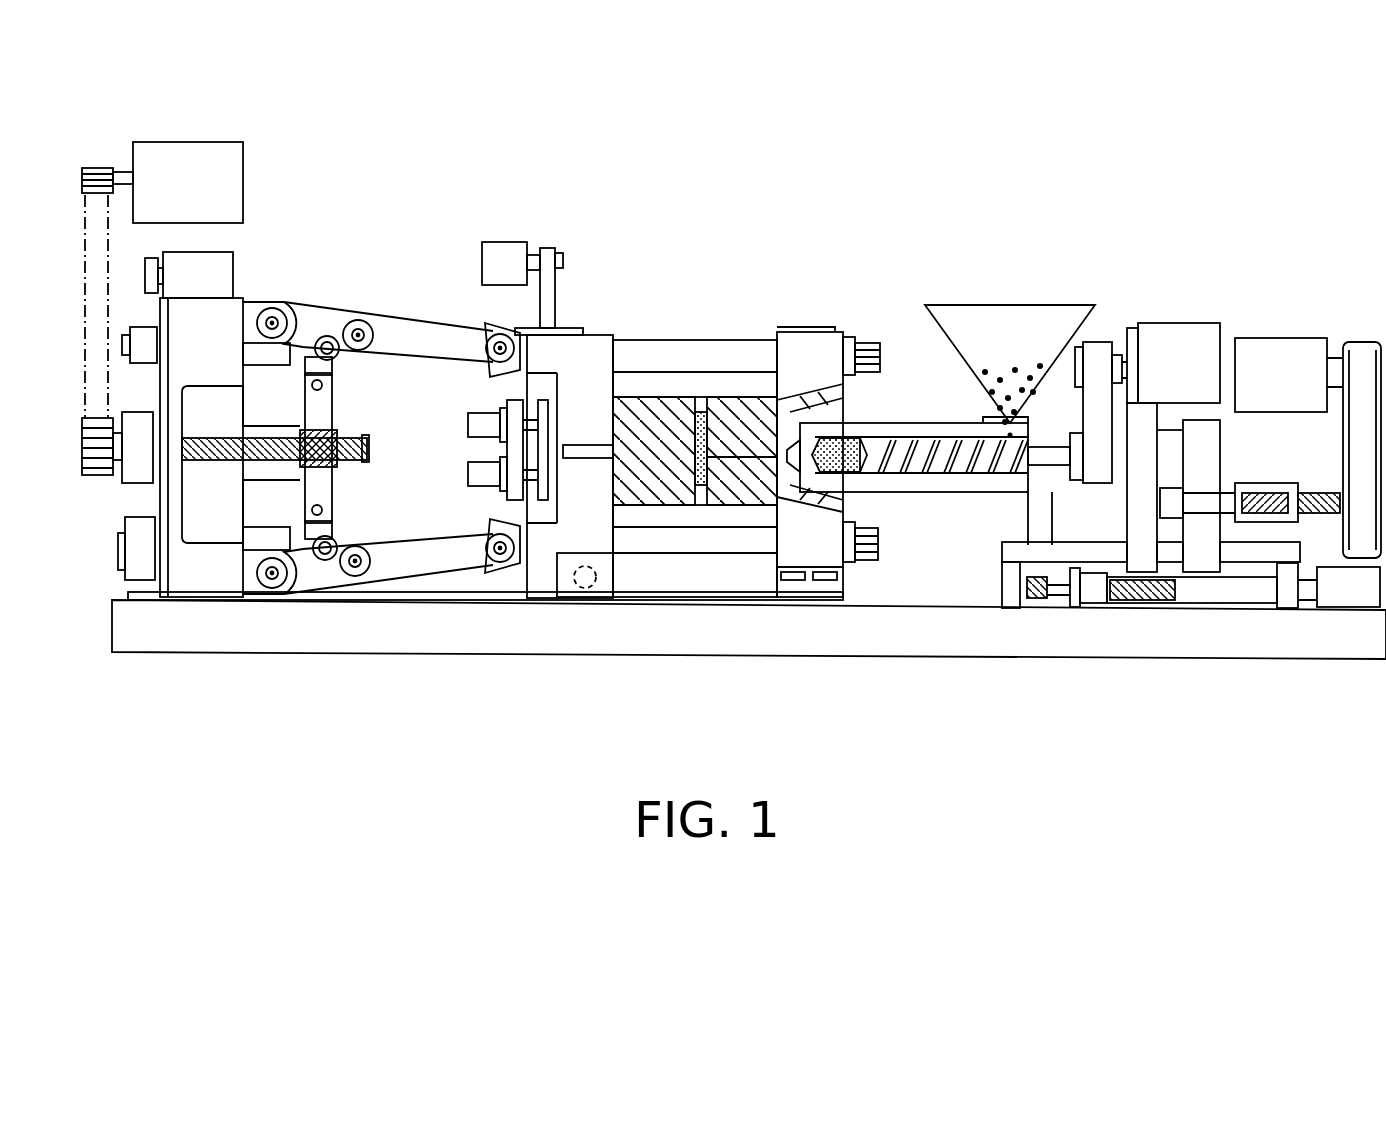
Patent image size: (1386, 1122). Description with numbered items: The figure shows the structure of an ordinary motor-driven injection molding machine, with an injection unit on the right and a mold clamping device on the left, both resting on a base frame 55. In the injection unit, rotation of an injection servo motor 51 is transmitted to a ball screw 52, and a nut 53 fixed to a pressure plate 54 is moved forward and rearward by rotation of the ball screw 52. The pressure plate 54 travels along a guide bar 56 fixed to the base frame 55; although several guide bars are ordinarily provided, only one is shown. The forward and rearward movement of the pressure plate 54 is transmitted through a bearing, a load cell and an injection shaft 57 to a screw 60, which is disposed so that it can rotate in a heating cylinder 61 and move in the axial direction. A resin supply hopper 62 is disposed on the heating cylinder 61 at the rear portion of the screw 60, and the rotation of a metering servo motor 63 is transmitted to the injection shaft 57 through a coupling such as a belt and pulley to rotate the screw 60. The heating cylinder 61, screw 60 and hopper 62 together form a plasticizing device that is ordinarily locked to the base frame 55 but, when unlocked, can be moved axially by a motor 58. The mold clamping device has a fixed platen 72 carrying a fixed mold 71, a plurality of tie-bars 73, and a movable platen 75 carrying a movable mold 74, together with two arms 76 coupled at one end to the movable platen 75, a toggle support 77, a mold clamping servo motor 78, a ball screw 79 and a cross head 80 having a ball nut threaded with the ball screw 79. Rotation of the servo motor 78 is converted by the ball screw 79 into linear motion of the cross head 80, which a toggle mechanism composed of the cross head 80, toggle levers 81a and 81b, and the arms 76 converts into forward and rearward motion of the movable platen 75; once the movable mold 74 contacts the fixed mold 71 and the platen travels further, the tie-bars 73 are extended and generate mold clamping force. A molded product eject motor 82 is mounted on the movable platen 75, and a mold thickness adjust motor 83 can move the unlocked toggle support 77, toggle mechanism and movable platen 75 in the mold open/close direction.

The injection servo motor 51 is at (1300, 338).
The ball screw 52 is at (1318, 492).
The nut 53 is at (1237, 483).
The pressure plate 54 is at (1222, 425).
The base frame 55 is at (990, 658).
The guide bar 56 is at (1002, 552).
The injection shaft 57 is at (1083, 484).
The motor 58 is at (1353, 604).
The screw 60 is at (925, 483).
The heating cylinder 61 is at (921, 422).
The resin supply hopper 62 is at (1007, 303).
The metering servo motor 63 is at (1193, 323).
The fixed mold 71 is at (743, 408).
The fixed platen 72 is at (815, 330).
The tie-bars 73 is at (696, 337).
The movable mold 74 is at (647, 410).
The movable platen 75 is at (600, 333).
The arms 76 is at (428, 320).
The toggle support 77 is at (212, 324).
The mold clamping servo motor 78 is at (246, 181).
The ball screw 79 is at (190, 440).
The cross head 80 is at (325, 412).
The toggle lever 81a is at (318, 310).
The toggle lever 81b is at (337, 355).
The molded product eject motor 82 is at (508, 243).
The mold thickness adjust motor 83 is at (233, 262).